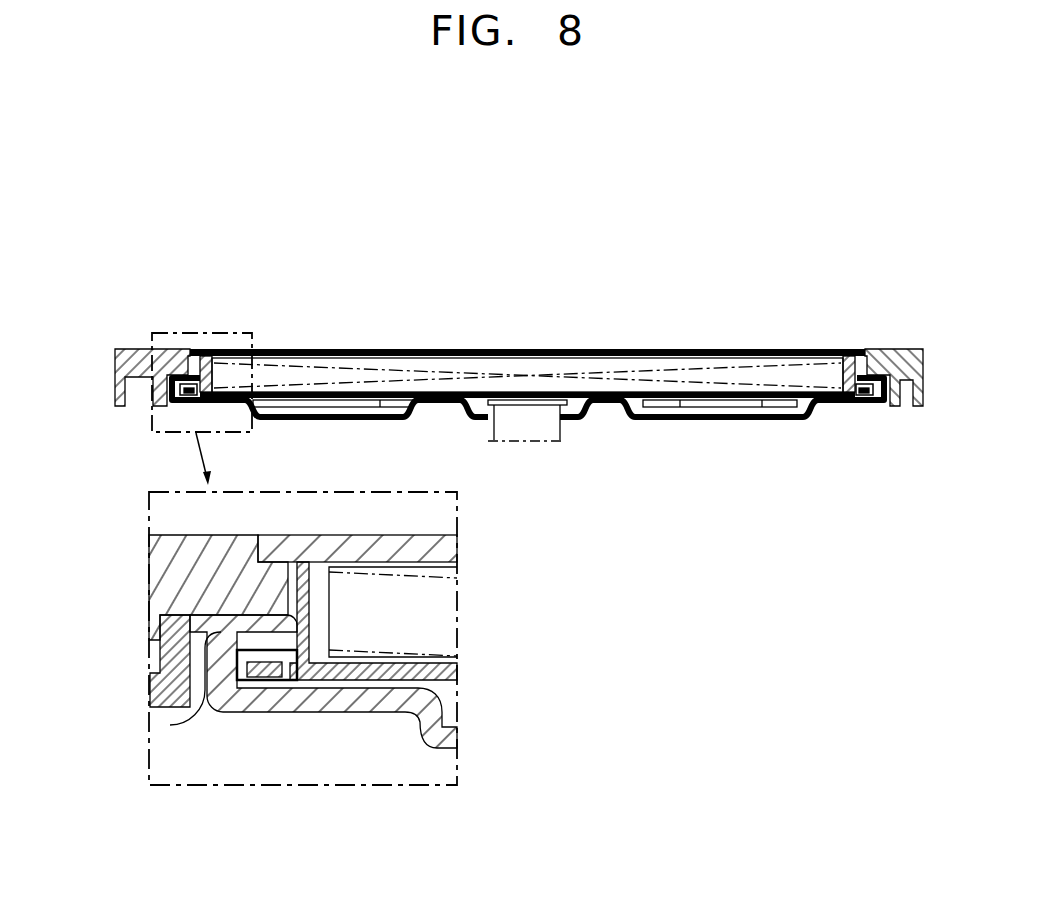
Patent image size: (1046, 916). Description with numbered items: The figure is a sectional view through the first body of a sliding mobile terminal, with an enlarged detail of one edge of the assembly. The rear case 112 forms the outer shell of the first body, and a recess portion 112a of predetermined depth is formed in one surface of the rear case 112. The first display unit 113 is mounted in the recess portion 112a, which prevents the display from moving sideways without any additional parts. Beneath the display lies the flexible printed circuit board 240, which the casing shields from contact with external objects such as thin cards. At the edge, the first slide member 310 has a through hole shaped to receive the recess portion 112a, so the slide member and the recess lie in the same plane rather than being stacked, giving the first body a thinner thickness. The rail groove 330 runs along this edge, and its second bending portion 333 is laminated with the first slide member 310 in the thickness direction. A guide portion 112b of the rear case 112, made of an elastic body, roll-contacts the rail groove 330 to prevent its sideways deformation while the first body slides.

The first display unit 113 is at (492, 355).
The flexible printed circuit board 240 is at (540, 447).
The rear case 112 is at (150, 650).
The recess portion 112a is at (447, 668).
The guide portion 112b is at (150, 722).
The first slide member 310 is at (287, 681).
The rail groove 330 is at (380, 704).
The second bending portion 333 is at (220, 682).